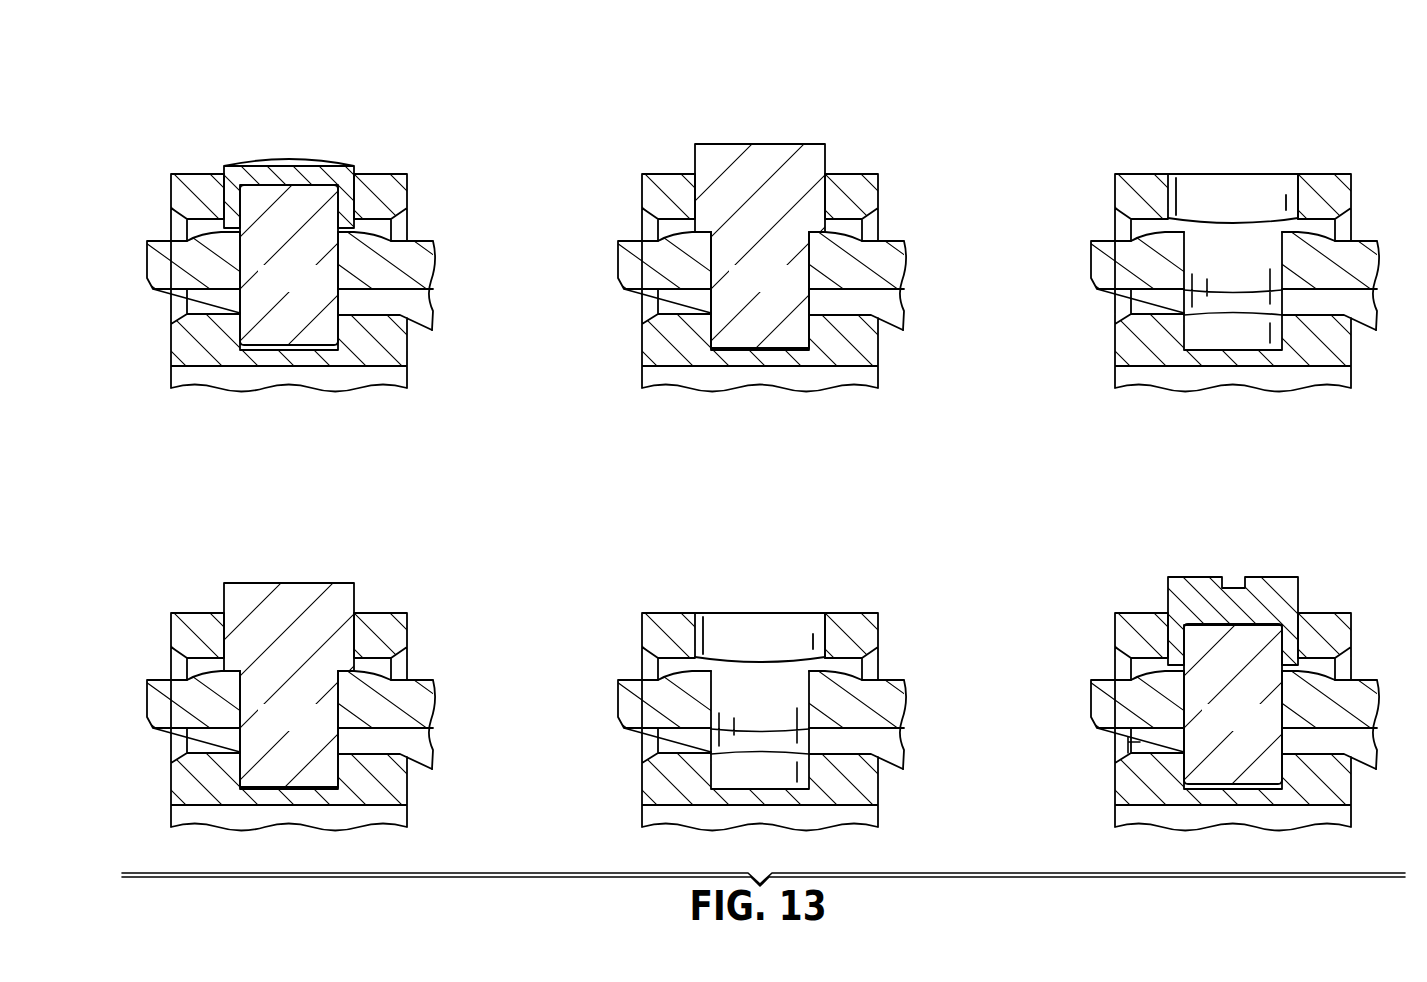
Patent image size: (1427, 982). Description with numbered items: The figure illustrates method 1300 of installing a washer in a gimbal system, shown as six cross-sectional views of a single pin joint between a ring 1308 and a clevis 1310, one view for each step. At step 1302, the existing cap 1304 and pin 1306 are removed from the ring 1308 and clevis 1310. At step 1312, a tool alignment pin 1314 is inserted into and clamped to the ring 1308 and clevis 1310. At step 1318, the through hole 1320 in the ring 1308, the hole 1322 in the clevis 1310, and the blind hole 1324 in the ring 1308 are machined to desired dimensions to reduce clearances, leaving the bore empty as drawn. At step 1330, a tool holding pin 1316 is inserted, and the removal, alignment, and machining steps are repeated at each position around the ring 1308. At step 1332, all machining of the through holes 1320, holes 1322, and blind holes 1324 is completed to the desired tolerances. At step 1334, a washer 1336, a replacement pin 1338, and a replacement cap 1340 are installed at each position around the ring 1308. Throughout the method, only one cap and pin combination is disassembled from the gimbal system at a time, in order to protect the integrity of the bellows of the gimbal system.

The method 1300 is at (462, 65).
The step of removing existing cap and pin 1302 is at (209, 125).
The existing cap 1304 is at (287, 159).
The existing pin 1306 is at (260, 287).
The ring 1308 is at (395, 182).
The clevis 1310 is at (159, 261).
The step of inserting tool alignment pin 1312 is at (699, 120).
The tool alignment pin 1314 is at (733, 287).
The tool holding pin 1316 is at (260, 726).
The step of machining holes 1318 is at (1354, 120).
The through hole 1320 is at (1292, 193).
The hole 1322 is at (1186, 250).
The blind hole 1324 is at (1188, 332).
The step of inserting tool holding pin 1330 is at (187, 556).
The step of completing machining 1332 is at (699, 576).
The step of installing washer, replacement pin, and replacement cap 1334 is at (1354, 564).
The washer 1336 is at (1142, 743).
The replacement pin 1338 is at (1205, 726).
The replacement cap 1340 is at (1192, 582).